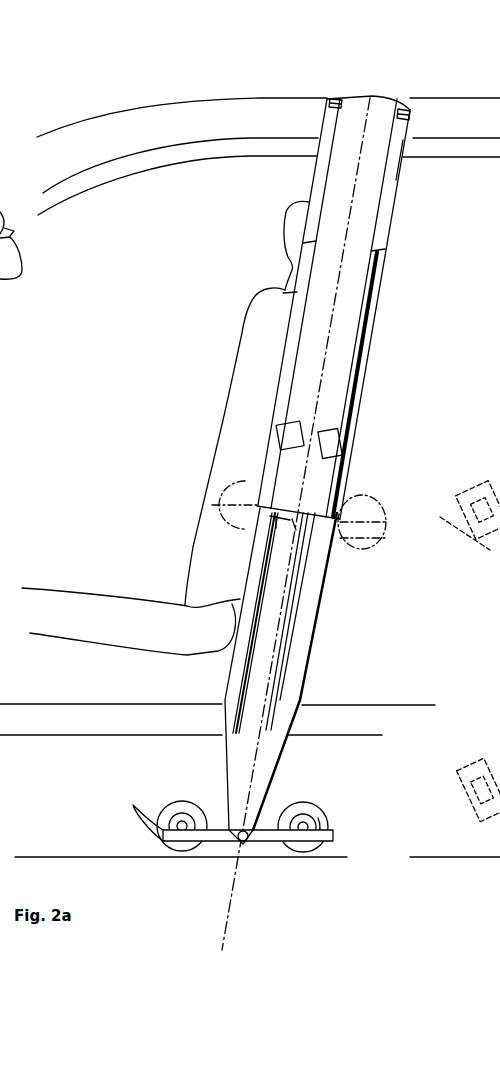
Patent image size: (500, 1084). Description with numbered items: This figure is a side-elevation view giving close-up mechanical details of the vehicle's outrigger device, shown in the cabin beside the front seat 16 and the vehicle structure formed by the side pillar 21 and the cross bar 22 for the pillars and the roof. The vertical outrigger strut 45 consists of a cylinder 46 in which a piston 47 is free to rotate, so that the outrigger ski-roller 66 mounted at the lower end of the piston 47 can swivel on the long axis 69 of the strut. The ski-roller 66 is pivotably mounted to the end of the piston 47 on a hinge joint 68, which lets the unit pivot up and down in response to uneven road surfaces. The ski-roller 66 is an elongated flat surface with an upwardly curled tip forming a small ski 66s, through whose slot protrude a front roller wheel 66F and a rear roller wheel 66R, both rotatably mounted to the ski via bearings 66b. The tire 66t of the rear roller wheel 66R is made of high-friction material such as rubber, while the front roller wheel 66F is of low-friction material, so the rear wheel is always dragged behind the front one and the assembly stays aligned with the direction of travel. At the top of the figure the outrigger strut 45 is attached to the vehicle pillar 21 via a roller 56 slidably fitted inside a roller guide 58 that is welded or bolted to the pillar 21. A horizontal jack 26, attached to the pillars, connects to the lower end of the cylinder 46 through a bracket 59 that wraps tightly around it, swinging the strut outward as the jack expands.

The front seat 16 is at (148, 558).
The side pillar 21 is at (372, 306).
The cross bar 22 is at (0, 489).
The horizontal jack 26 is at (0, 312).
The outrigger strut 45 is at (370, 349).
The cylinder 46 is at (328, 262).
The piston 47 is at (272, 681).
The roller 56 is at (409, 111).
The roller guide 58 is at (393, 162).
The bracket 59 is at (499, 398).
The outrigger ski-roller 66 is at (272, 846).
The front roller wheel 66F is at (180, 803).
The rear roller wheel 66R is at (300, 808).
The bearings 66b is at (290, 805).
The tire 66t is at (325, 822).
The ski 66s is at (220, 840).
The hinge joint 68 is at (243, 843).
The long axis 69 is at (231, 895).